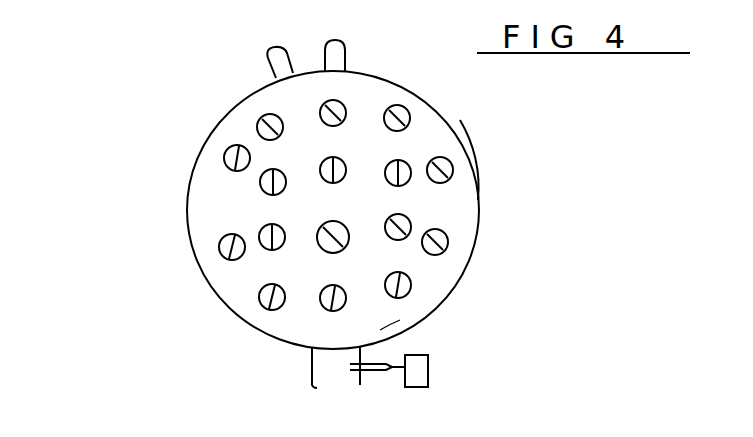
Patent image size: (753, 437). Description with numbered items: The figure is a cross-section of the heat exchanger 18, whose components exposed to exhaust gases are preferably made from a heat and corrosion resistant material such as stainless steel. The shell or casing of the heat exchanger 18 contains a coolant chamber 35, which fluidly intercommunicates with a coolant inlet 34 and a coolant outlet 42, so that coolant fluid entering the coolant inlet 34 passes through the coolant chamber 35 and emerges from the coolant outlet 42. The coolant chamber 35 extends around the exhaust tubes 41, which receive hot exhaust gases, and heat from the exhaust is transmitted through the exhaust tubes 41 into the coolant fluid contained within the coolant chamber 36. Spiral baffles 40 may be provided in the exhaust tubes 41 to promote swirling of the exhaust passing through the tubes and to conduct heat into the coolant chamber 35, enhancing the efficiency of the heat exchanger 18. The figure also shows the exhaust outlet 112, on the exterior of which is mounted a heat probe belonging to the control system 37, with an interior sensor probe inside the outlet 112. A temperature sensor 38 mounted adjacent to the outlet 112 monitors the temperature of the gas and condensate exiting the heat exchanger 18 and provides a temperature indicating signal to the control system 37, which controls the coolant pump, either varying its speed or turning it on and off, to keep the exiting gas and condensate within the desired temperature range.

The heat exchanger 18 is at (193, 170).
The coolant inlet 34 is at (345, 42).
The coolant outlet 42 is at (266, 55).
The coolant chamber 36 is at (470, 150).
The coolant chamber 35 is at (487, 229).
The spiral baffles 40 is at (222, 248).
The exhaust tubes 41 is at (370, 294).
The exhaust outlet 112 is at (312, 363).
The temperature sensor 38 is at (357, 372).
The control system 37 is at (424, 387).